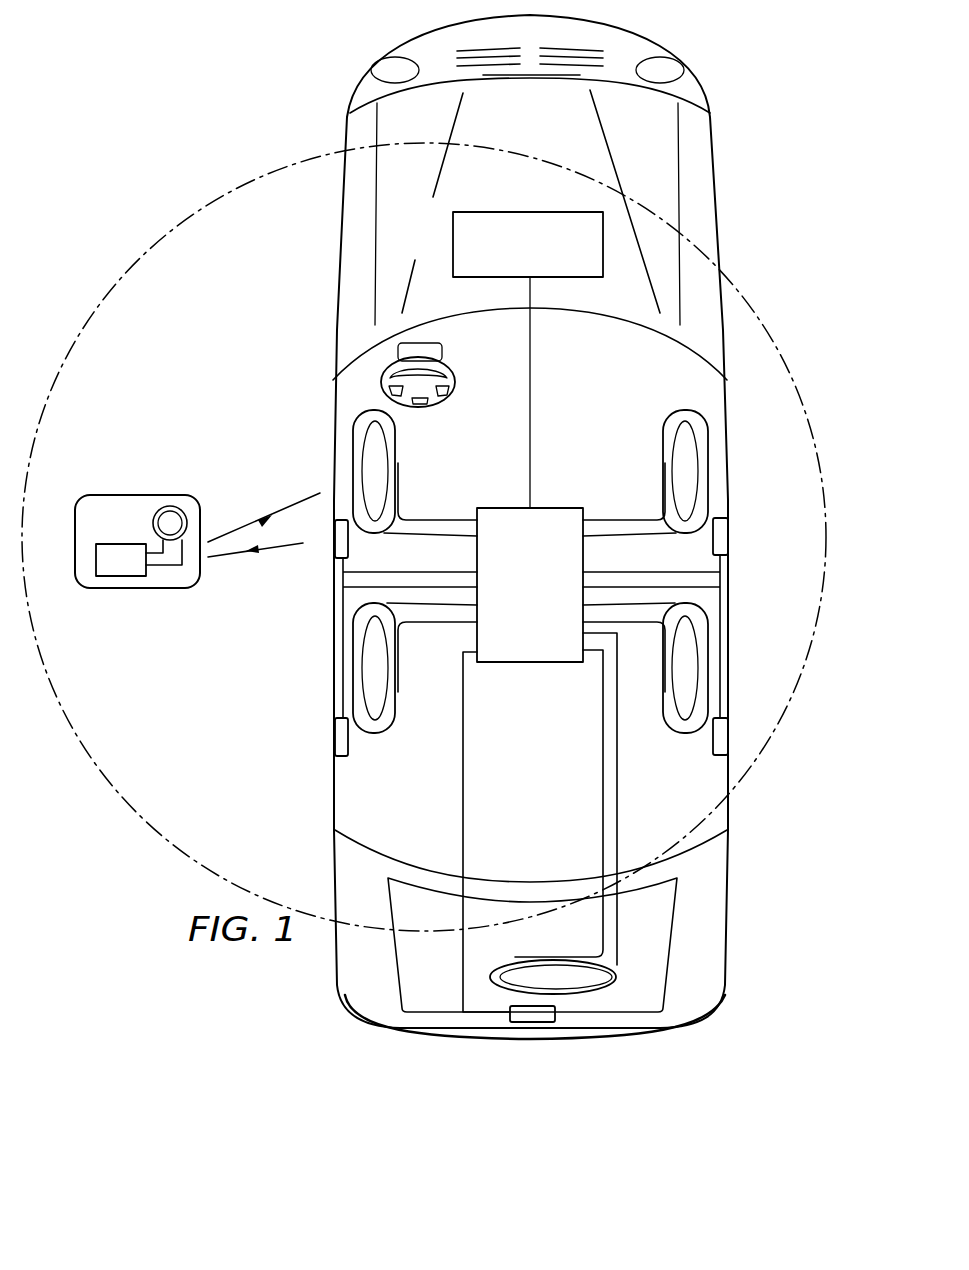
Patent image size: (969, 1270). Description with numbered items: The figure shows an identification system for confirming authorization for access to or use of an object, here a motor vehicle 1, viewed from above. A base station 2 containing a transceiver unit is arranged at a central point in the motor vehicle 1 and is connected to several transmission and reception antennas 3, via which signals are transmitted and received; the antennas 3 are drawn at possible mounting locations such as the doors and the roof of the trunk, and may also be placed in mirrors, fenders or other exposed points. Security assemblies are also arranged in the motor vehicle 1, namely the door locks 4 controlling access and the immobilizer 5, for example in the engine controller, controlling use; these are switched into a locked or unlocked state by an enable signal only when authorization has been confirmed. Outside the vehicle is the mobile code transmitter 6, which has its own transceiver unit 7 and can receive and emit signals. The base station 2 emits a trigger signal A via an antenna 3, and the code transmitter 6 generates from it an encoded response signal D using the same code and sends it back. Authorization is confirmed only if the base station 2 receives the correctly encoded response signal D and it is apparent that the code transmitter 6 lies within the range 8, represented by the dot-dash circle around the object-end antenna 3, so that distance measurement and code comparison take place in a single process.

The motor vehicle 1 is at (320, 130).
The base station 2 is at (553, 508).
The transmission and reception antennas 3 is at (398, 476).
The door locks 4 is at (333, 547).
The immobilizer 5 is at (453, 245).
The code transmitter 6 is at (133, 490).
The transceiver unit 7 is at (120, 578).
The range 8 is at (83, 327).
The trigger signal A is at (275, 512).
The encoded response signal D is at (250, 556).